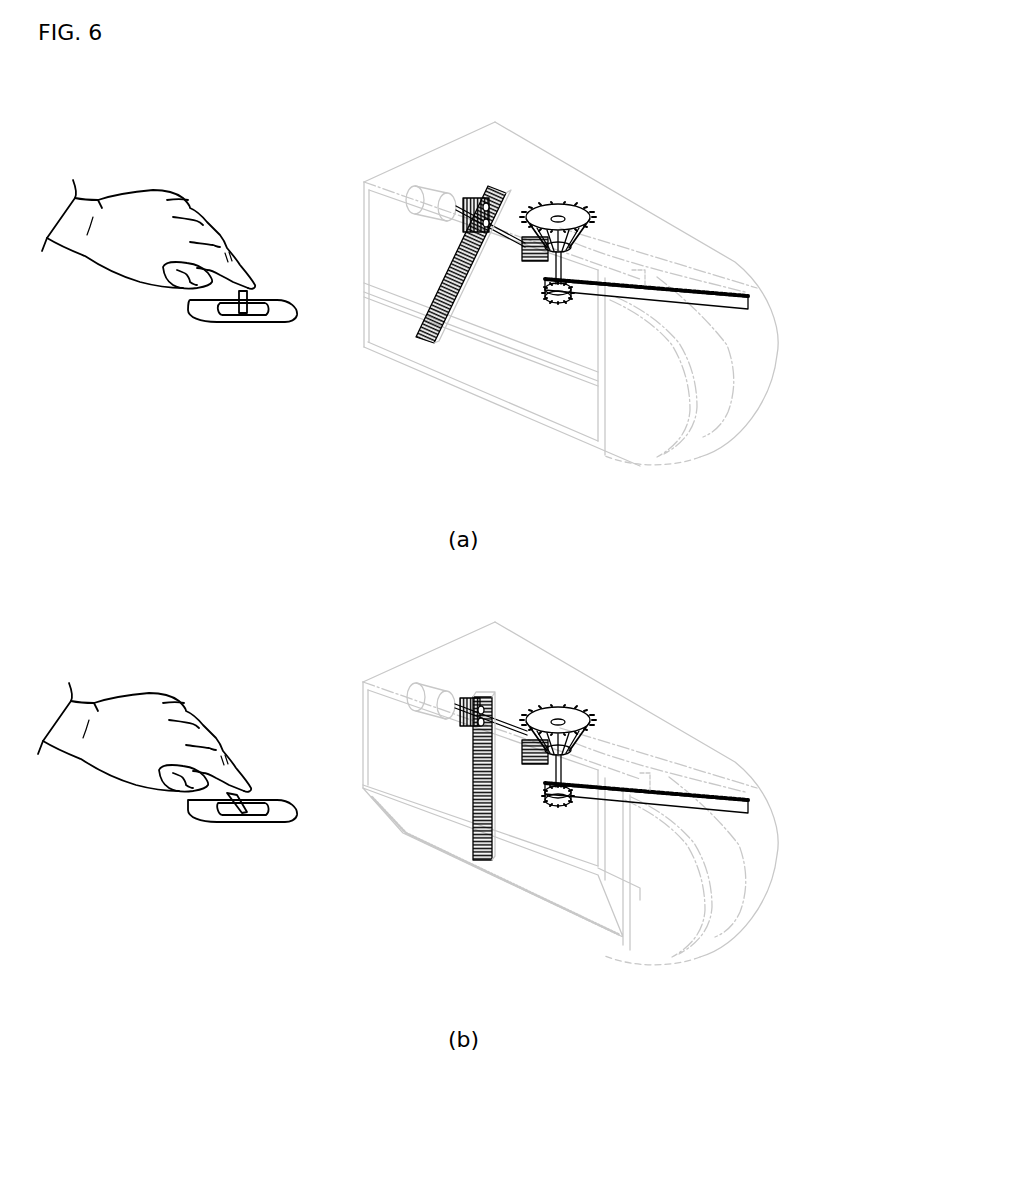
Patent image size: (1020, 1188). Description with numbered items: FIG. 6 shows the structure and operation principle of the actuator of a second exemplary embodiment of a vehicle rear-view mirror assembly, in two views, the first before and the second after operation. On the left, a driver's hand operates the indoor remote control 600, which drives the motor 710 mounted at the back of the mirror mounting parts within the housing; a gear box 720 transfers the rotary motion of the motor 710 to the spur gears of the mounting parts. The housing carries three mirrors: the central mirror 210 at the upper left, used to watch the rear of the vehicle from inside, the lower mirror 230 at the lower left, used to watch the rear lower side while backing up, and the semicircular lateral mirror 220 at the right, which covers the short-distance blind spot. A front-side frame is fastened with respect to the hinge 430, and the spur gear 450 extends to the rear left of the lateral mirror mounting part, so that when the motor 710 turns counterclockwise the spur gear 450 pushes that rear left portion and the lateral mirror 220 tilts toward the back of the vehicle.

The mirror 210 is at (408, 248).
The semicircular mirror 220 is at (650, 427).
The mirror 230 is at (485, 373).
The hinge 430 is at (748, 297).
The spur gear 450 is at (670, 367).
The indoor remote control 600 is at (245, 320).
The motor 710 is at (408, 196).
The gear box 720 is at (498, 170).